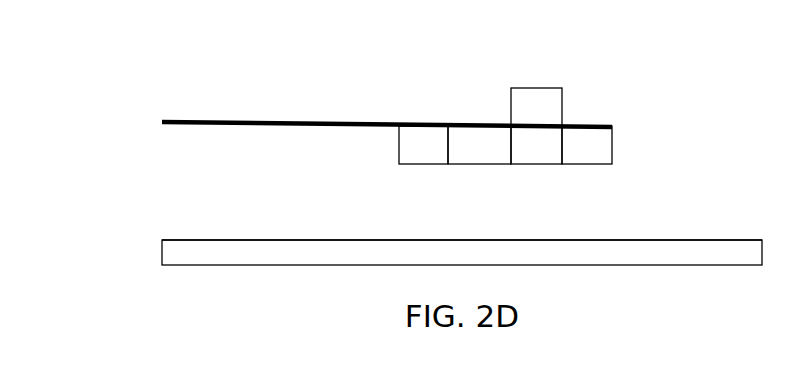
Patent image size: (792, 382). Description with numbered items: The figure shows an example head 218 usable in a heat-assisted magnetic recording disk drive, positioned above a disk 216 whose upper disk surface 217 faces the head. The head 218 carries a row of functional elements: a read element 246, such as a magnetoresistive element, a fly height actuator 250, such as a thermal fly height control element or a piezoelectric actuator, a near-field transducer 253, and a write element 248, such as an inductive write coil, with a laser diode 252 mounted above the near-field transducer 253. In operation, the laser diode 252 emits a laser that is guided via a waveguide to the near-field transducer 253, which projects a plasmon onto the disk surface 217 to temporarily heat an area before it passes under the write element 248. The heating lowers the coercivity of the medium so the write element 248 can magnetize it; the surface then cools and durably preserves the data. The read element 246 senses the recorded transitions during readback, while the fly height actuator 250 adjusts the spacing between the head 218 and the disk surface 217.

The disk 216 is at (168, 245).
The disk surface 217 is at (349, 232).
The head 218 is at (632, 127).
The read element 246 is at (405, 126).
The write element 248 is at (580, 126).
The fly height actuator 250 is at (468, 126).
The laser diode 252 is at (530, 88).
The near-field transducer 253 is at (535, 165).